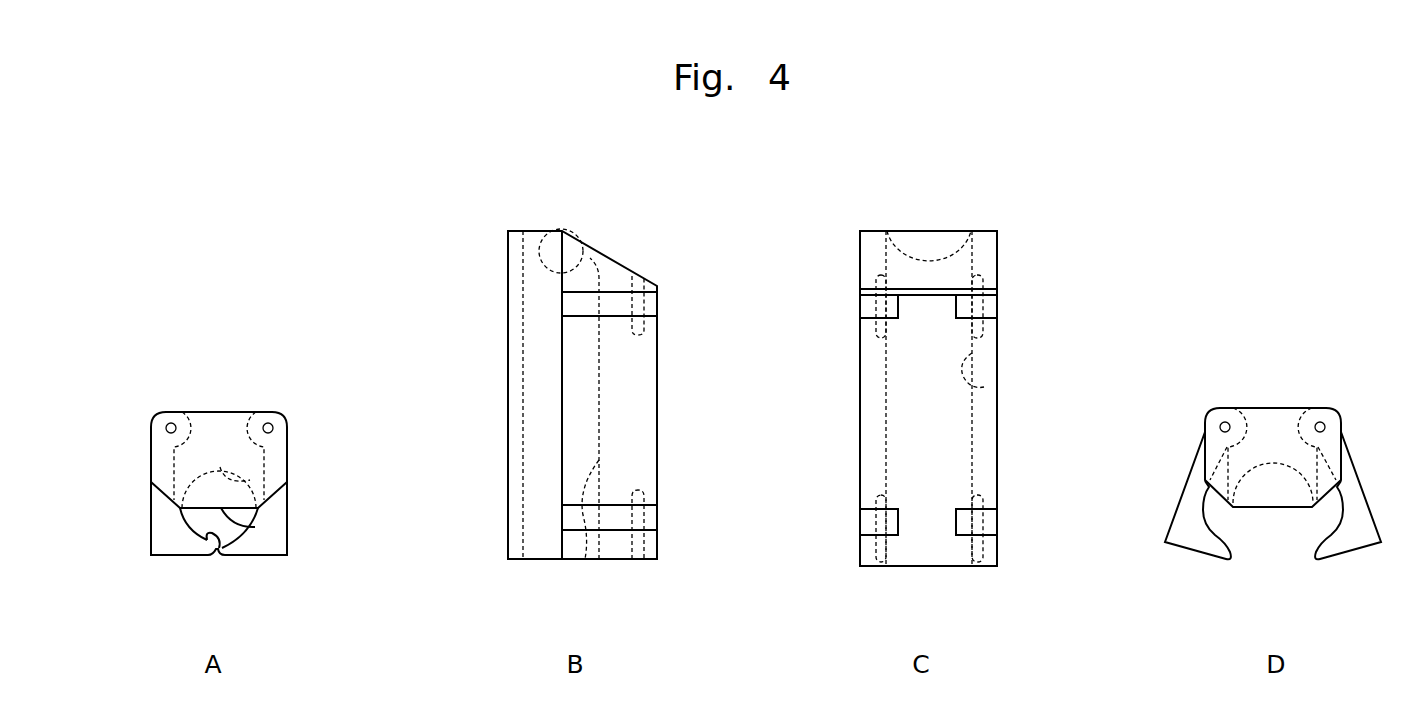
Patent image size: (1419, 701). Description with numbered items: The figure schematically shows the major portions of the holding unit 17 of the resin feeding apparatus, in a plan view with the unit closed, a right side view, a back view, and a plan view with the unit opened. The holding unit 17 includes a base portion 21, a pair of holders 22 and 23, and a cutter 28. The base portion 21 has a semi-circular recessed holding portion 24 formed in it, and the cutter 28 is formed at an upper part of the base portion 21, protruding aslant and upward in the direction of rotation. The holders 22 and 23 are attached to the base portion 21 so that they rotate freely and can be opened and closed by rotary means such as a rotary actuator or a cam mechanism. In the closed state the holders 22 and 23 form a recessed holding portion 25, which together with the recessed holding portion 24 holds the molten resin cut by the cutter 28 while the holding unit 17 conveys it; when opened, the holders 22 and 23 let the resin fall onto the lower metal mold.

The holding unit 17 is at (199, 410).
The base portion 21 is at (233, 437).
The holder 22 is at (262, 540).
The holder 23 is at (171, 535).
The recessed holding portion 24 is at (250, 480).
The recessed holding portion 25 is at (208, 542).
The cutter 28 is at (252, 526).